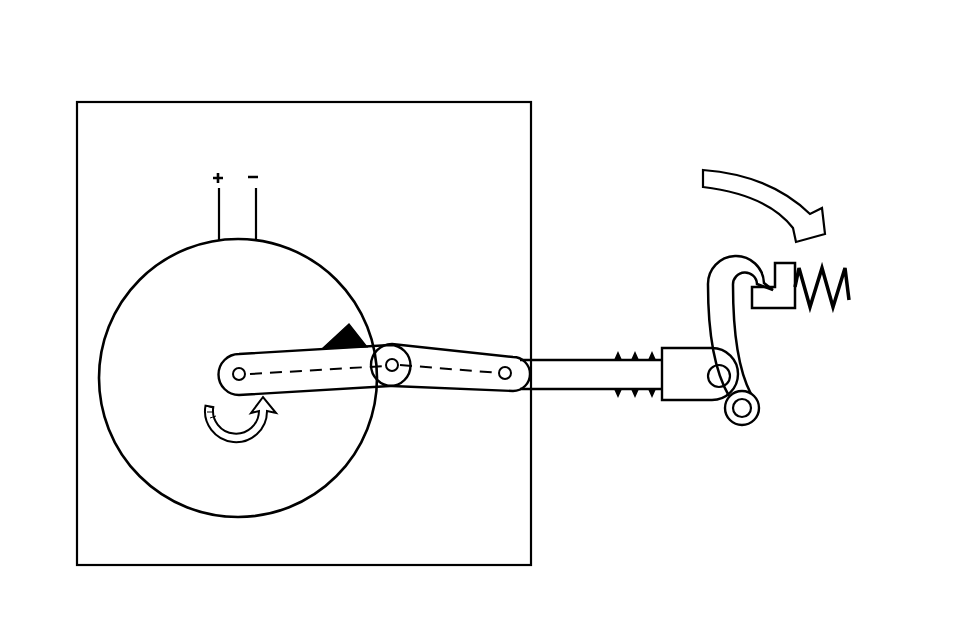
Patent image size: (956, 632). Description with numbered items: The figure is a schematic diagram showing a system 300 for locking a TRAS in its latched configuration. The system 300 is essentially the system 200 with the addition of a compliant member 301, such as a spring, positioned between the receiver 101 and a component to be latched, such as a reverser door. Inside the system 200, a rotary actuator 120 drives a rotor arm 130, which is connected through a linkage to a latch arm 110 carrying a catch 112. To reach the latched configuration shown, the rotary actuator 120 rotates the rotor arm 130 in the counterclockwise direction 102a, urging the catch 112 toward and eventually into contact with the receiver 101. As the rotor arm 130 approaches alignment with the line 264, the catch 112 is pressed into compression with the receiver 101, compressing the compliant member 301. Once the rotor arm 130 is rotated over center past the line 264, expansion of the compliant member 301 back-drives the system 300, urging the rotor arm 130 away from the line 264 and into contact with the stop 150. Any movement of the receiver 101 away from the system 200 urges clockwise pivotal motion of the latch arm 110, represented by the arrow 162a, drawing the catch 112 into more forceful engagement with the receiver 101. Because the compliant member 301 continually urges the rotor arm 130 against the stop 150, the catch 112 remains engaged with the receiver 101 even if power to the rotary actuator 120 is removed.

The system 300 is at (58, 54).
The system 200 is at (58, 108).
The rotary actuator 120 is at (157, 264).
The rotor arm 130 is at (292, 348).
The stop 150 is at (343, 331).
The line 264 is at (468, 372).
The latch arm 110 is at (708, 313).
The catch 112 is at (735, 258).
The receiver 101 is at (773, 309).
The compliant member 301 is at (830, 300).
The arrow 162a is at (773, 188).
The counterclockwise direction 102a is at (210, 428).